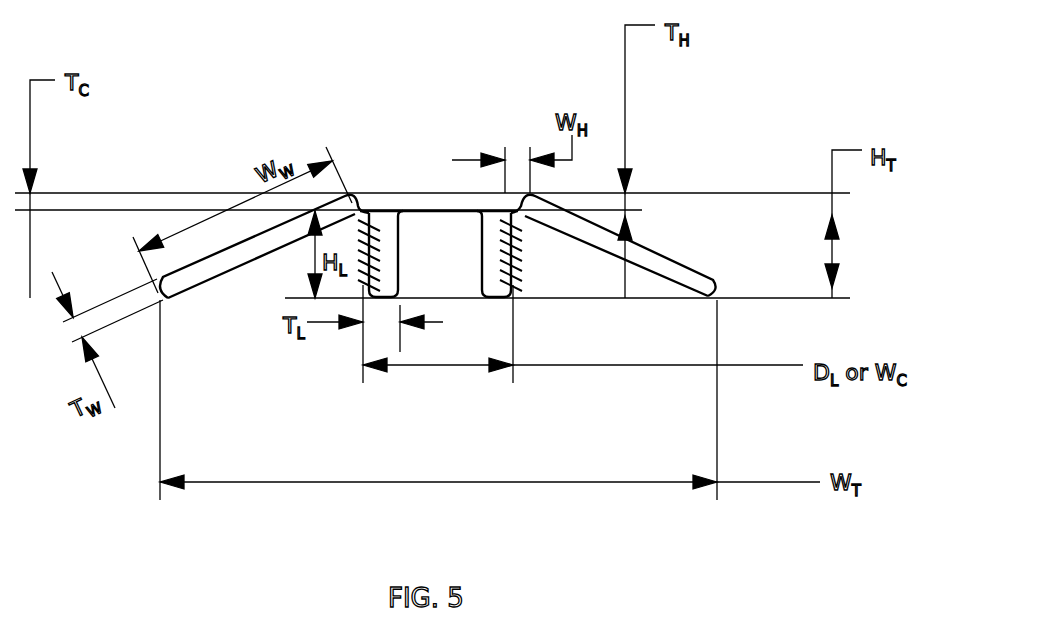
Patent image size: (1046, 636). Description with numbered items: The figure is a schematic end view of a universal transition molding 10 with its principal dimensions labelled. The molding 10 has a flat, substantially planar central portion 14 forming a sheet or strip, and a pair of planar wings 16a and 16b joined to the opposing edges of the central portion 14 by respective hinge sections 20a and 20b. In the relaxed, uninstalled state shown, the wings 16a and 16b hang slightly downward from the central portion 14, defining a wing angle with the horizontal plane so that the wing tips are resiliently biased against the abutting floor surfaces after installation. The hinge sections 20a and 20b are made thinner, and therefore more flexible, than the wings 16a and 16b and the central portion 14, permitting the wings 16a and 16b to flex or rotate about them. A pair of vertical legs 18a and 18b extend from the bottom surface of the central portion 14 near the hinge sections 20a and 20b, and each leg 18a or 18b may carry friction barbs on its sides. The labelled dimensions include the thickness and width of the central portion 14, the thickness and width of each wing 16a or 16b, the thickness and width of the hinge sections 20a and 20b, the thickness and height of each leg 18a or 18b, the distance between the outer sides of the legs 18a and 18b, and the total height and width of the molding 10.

The universal transition molding 10 is at (232, 95).
The central portion 14 is at (437, 211).
The wing 16a is at (200, 281).
The wing 16b is at (683, 257).
The vertical leg 18a is at (400, 257).
The vertical leg 18b is at (489, 300).
The hinge section 20a is at (363, 208).
The hinge section 20b is at (517, 226).